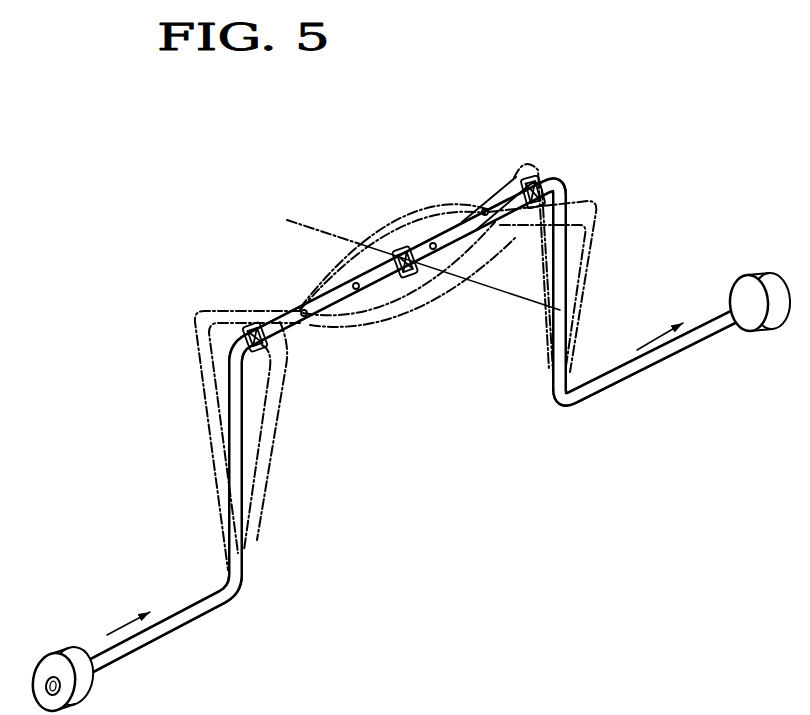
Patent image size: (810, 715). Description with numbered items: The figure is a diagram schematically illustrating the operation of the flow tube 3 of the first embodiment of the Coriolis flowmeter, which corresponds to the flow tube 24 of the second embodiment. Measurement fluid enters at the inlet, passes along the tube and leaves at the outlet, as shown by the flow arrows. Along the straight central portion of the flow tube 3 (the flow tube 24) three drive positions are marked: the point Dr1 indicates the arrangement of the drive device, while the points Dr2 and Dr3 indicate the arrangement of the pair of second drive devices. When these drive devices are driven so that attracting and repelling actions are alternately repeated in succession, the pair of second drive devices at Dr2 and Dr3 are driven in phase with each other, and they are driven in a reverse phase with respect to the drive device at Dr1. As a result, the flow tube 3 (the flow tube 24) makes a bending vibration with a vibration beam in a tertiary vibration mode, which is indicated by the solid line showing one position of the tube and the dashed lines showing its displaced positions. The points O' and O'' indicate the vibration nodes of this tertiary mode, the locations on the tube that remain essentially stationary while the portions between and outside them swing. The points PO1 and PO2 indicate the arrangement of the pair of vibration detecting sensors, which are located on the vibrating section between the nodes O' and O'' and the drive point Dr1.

The flow tube 3 is at (198, 620).
The flow tube 24 is at (410, 430).
The point indicating arrangement of the drive device Dr1 is at (380, 232).
The point indicating arrangement of a second drive device Dr2 is at (246, 316).
The point indicating arrangement of a second drive device Dr3 is at (536, 160).
The vibration node O' is at (320, 344).
The vibration node O'' is at (500, 245).
The point indicating arrangement of a vibration detecting sensor PO1 is at (358, 291).
The point indicating arrangement of a vibration detecting sensor PO2 is at (438, 254).